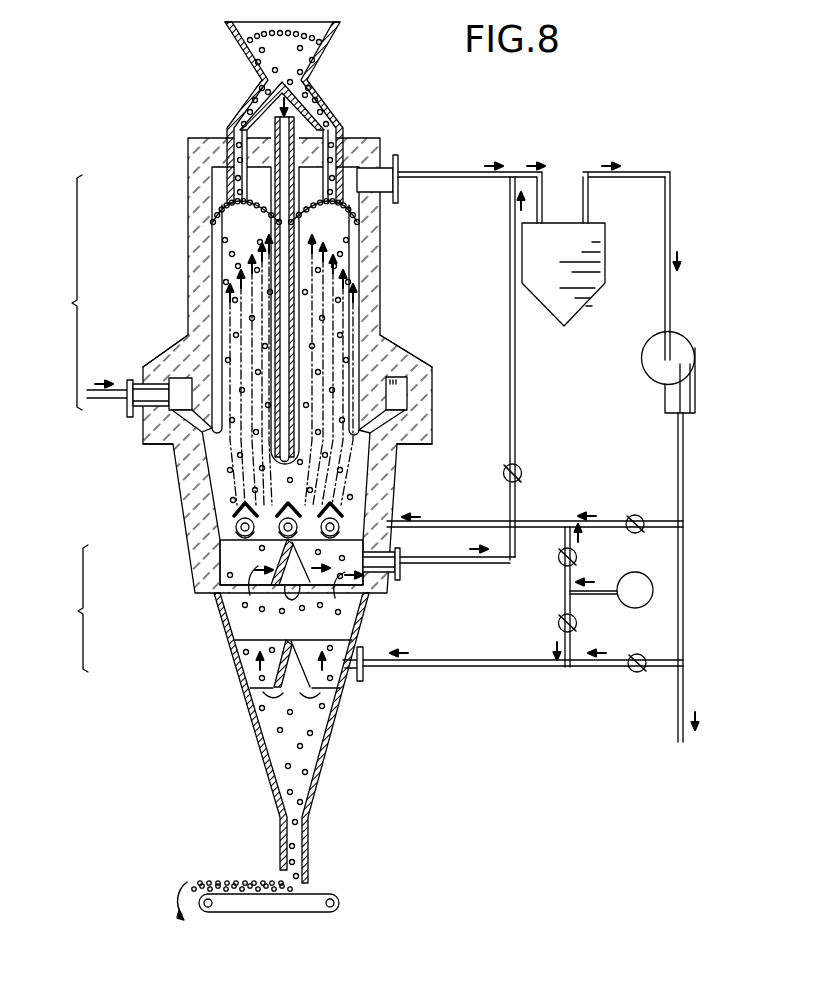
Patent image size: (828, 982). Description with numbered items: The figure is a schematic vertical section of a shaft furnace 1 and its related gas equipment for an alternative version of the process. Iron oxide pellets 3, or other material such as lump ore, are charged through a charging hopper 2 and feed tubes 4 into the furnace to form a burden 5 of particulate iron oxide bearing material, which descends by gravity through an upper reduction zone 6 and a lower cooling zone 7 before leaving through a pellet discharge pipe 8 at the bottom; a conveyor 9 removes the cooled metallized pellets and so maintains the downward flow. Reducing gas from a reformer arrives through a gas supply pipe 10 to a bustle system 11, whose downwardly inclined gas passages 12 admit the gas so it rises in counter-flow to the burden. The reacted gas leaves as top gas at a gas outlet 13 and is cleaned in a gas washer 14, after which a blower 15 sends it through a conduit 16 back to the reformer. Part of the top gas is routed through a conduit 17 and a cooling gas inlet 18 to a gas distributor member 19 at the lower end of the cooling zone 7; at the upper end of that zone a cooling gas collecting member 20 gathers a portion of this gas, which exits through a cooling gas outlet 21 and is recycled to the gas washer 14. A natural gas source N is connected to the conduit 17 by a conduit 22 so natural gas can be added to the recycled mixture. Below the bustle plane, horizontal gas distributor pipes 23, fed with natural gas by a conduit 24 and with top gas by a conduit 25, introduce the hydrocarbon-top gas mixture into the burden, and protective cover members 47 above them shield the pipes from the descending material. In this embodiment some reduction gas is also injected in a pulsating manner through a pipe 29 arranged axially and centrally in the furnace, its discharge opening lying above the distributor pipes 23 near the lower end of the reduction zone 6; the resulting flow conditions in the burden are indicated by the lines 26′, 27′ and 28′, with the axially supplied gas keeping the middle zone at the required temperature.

The shaft furnace 1 is at (176, 521).
The charging hopper 2 is at (323, 47).
The iron oxide pellets 3 is at (293, 66).
The feed tubes 4 is at (342, 137).
The pipe 29 is at (271, 137).
The burden 5 is at (242, 232).
The upper reduction zone 6 is at (70, 304).
The lower cooling zone 7 is at (77, 612).
The pellet discharge pipe 8 is at (308, 827).
The conveyor 9 is at (278, 915).
The gas supply pipe 10 is at (96, 392).
The bustle system 11 is at (405, 386).
The downwardly inclined gas passages 12 is at (160, 443).
The gas outlet 13 is at (399, 167).
The gas washer 14 is at (548, 313).
The blower 15 is at (651, 338).
The conduit 16 is at (678, 715).
The conduit 17 is at (602, 668).
The cooling gas inlet 18 is at (364, 652).
The gas distributor member 19 is at (285, 648).
The cooling gas collecting member 20 is at (280, 565).
The cooling gas outlet 21 is at (400, 574).
The conduit 22 is at (565, 606).
The horizontal gas distributor pipes 23 is at (250, 540).
The conduit 24 is at (457, 520).
The conduit 25 is at (612, 519).
The flow line 26′ is at (242, 340).
The flow line 27′ is at (233, 302).
The flow line 28′ is at (352, 333).
The protective cover members 47 is at (240, 510).